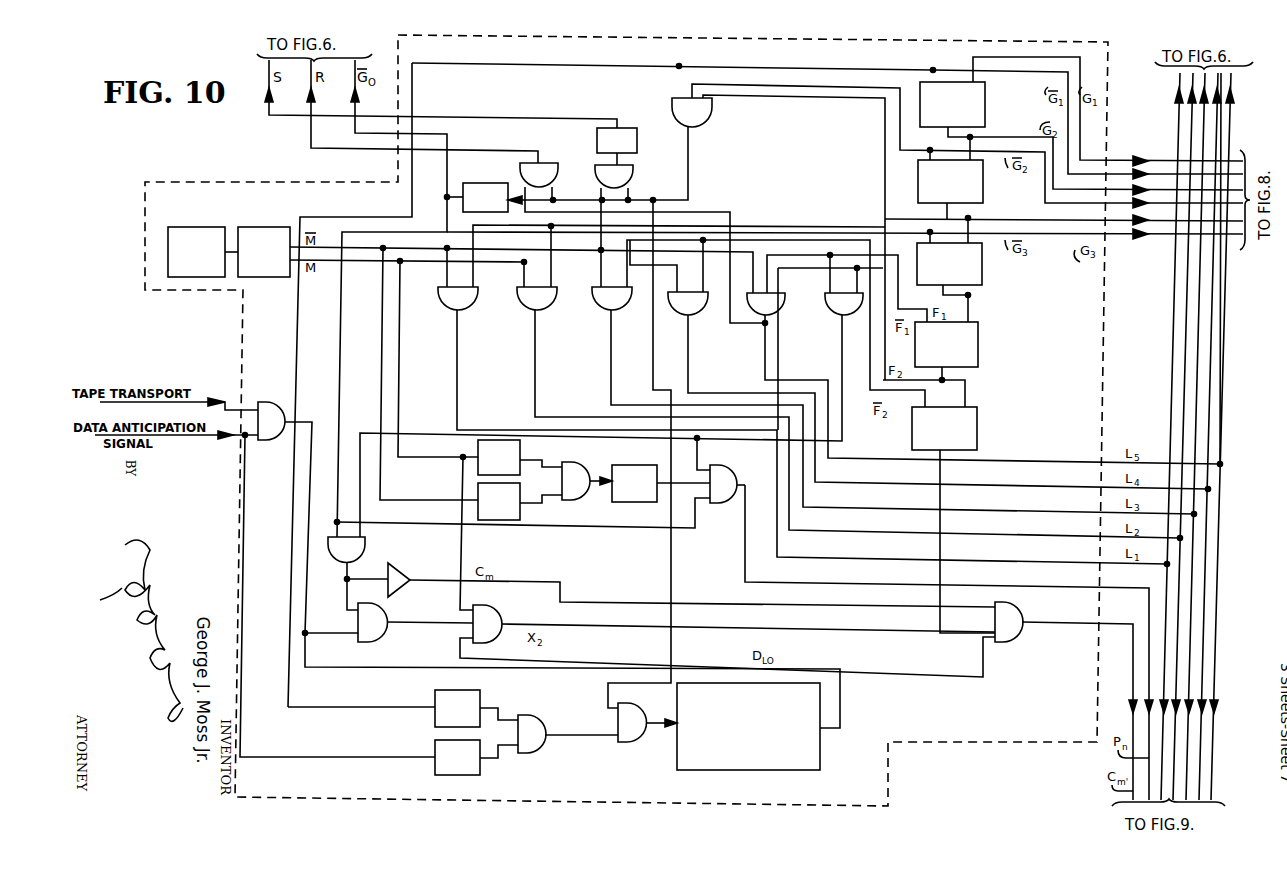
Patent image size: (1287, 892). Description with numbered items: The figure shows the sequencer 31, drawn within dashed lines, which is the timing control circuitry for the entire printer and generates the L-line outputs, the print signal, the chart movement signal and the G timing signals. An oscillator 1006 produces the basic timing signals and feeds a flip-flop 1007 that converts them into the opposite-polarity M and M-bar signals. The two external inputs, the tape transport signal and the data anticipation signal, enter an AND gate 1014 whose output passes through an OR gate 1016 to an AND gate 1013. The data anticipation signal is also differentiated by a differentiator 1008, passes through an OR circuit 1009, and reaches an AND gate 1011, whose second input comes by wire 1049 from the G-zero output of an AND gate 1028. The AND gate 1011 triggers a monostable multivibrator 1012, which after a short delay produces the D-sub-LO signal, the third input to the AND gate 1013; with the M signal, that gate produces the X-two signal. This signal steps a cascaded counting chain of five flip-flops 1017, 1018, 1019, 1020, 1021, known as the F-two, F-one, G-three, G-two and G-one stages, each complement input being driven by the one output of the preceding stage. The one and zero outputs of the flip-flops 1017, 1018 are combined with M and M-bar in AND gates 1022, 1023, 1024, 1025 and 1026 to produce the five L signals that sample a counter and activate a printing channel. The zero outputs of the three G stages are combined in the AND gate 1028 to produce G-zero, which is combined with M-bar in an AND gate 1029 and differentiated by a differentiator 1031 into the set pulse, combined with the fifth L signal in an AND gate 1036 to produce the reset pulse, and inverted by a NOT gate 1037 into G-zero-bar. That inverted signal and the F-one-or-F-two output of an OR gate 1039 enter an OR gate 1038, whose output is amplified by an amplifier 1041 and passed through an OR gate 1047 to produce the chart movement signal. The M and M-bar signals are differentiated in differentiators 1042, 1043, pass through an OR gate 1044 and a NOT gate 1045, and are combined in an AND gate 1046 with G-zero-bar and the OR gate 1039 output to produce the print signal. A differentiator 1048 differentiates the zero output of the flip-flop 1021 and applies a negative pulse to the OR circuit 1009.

The sequencer 31 is at (190, 177).
The oscillator 1006 is at (208, 223).
The flip-flop 1007 is at (248, 230).
The differentiator 1008 is at (460, 775).
The OR circuit 1009 is at (530, 753).
The AND gate 1011 is at (643, 738).
The monostable multivibrator 1012 is at (757, 770).
The AND gate 1013 is at (484, 605).
The AND gate 1014 is at (265, 402).
The OR gate 1016 is at (389, 612).
The flip-flop 1017 is at (995, 422).
The flip-flop 1018 is at (996, 342).
The flip-flop 1019 is at (998, 263).
The flip-flop 1020 is at (974, 183).
The flip-flop 1021 is at (975, 105).
The AND gate 1022 is at (440, 305).
The AND gate 1023 is at (519, 305).
The AND gate 1024 is at (594, 305).
The AND gate 1025 is at (700, 312).
The AND gate 1026 is at (797, 292).
The AND gate 1028 is at (712, 113).
The AND gate 1029 is at (630, 183).
The differentiator 1031 is at (637, 143).
The AND gate 1036 is at (572, 172).
The NOT gate 1037 is at (470, 183).
The OR gate 1038 is at (365, 548).
The OR gate 1039 is at (828, 310).
The amplifier 1041 is at (392, 568).
The differentiator 1042 is at (520, 448).
The differentiator 1043 is at (520, 506).
The OR gate 1044 is at (585, 496).
The NOT gate 1045 is at (622, 465).
The AND gate 1046 is at (716, 472).
The OR gate 1047 is at (1022, 614).
The differentiator 1048 is at (470, 690).
The wire 1049 is at (658, 690).